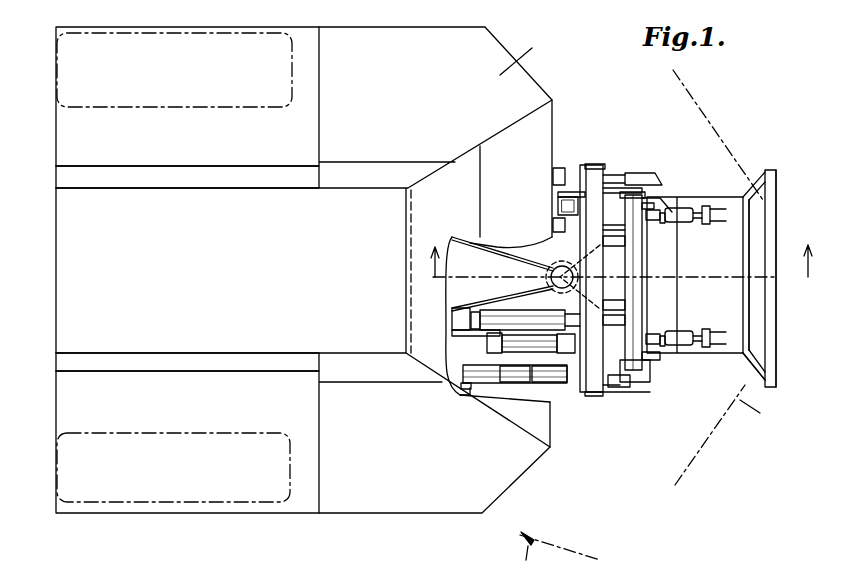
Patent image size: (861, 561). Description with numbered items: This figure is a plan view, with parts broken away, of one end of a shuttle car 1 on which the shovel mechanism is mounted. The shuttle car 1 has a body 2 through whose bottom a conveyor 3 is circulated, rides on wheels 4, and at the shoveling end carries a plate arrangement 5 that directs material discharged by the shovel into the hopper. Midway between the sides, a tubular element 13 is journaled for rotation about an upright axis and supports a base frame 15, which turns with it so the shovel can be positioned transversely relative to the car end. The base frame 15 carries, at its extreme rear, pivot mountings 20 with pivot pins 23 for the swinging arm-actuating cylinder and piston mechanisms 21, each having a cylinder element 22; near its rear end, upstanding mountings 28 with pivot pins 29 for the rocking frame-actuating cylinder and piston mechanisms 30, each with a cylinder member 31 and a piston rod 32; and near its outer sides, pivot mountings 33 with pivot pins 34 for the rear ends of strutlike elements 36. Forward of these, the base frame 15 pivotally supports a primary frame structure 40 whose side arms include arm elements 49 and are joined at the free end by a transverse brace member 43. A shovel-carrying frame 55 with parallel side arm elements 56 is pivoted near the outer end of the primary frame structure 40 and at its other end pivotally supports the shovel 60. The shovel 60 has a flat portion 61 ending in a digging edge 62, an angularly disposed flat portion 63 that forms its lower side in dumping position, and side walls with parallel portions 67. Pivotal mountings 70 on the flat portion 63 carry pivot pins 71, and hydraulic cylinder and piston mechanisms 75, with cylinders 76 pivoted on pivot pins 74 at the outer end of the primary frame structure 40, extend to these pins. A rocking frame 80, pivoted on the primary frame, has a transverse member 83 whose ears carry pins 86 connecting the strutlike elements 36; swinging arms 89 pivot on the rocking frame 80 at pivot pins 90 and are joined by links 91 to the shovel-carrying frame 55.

The shuttle car 1 is at (393, 523).
The body 2 is at (300, 511).
The conveyor 3 is at (165, 328).
The wheels 4 is at (263, 49).
The plate arrangement 5 is at (625, 295).
The tubular element 13 is at (556, 282).
The base frame 15 is at (495, 297).
The pivot mountings 20 is at (446, 396).
The swinging arm-actuating cylinder and piston mechanisms 21 is at (584, 172).
The cylinder element 22 is at (558, 168).
The pivot pin 23 is at (470, 388).
The upstanding mountings 28 is at (465, 318).
The pivot pins 29 is at (484, 334).
The rocking frame-actuating cylinder and piston mechanisms 30 is at (516, 298).
The cylinder member 31 is at (500, 310).
The piston rod 32 is at (610, 246).
The pivot mountings 33 is at (505, 340).
The pivot pins 34 is at (497, 376).
The strutlike elements 36 is at (556, 207).
The primary frame structure 40 is at (621, 193).
The transverse brace member 43 is at (614, 258).
The arm elements 49 is at (642, 245).
The shovel-carrying frame 55 is at (660, 362).
The side arm elements 56 is at (687, 212).
The shovel 60 is at (781, 238).
The flat portion 61 is at (752, 347).
The digging edge 62 is at (778, 302).
The flat portion 63 is at (738, 292).
The parallel portions 67 is at (752, 186).
The pivotal mountings 70 is at (748, 195).
The pivot pins 71 is at (708, 226).
The pivot pins 74 is at (662, 210).
The hydraulic cylinder and piston mechanisms 75 is at (678, 224).
The cylinders 76 is at (672, 212).
The rocking frame 80 is at (628, 172).
The transverse member 83 is at (620, 394).
The pins 86 is at (585, 172).
The swinging arms 89 is at (650, 196).
The pivot pins 90 is at (650, 203).
The links 91 is at (632, 382).